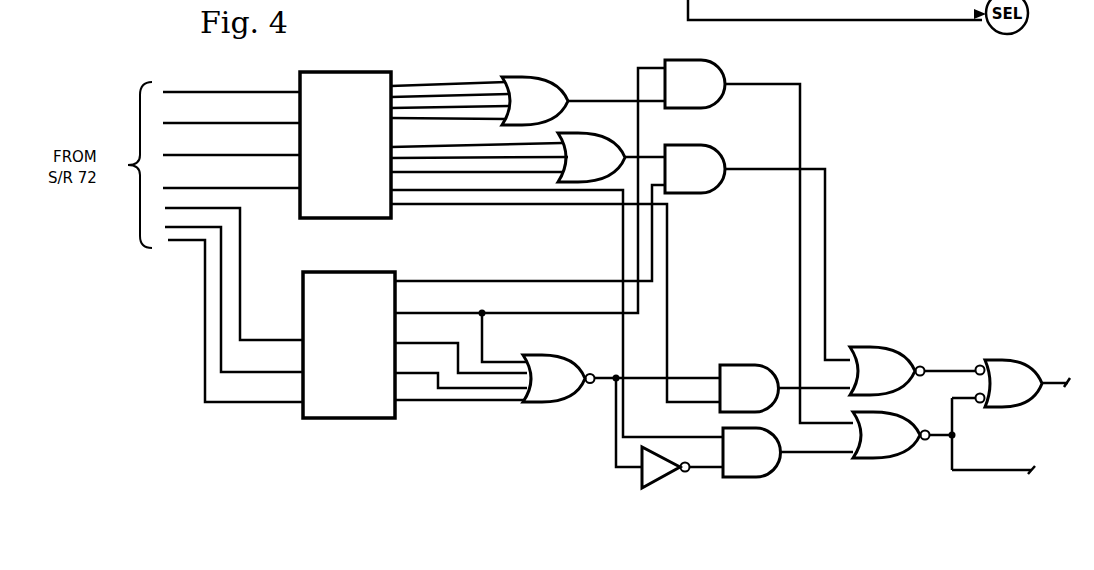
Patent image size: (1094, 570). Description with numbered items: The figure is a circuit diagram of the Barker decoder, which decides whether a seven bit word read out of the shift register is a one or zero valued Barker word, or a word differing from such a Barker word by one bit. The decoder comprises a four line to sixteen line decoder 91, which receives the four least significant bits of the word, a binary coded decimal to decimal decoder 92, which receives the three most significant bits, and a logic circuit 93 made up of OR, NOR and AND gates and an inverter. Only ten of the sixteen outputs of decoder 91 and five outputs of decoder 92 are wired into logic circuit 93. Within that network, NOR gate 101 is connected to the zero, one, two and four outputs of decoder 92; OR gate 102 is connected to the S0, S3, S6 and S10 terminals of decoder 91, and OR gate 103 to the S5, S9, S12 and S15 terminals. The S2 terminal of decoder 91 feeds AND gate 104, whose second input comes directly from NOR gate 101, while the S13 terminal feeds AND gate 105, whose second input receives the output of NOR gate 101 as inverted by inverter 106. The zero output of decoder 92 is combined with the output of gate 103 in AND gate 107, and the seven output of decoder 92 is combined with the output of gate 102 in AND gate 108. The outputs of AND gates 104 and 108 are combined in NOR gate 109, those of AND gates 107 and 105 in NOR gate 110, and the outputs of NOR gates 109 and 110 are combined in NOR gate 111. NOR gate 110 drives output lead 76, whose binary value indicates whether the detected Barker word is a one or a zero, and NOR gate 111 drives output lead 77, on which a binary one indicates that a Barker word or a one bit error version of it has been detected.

The four line to sixteen line decoder 91 is at (325, 219).
The binary coded decimal to decimal decoder 92 is at (328, 420).
The logic circuit 93 is at (770, 268).
The NOR gate 101 is at (558, 356).
The OR gate 102 is at (612, 130).
The OR gate 103 is at (565, 60).
The AND gate 104 is at (751, 365).
The AND gate 105 is at (770, 473).
The inverter 106 is at (642, 484).
The AND gate 107 is at (714, 63).
The AND gate 108 is at (722, 137).
The NOR gate 109 is at (905, 330).
The NOR gate 110 is at (902, 458).
The NOR gate 111 is at (1005, 358).
The output lead 76 is at (1002, 468).
The output lead 77 is at (1055, 379).